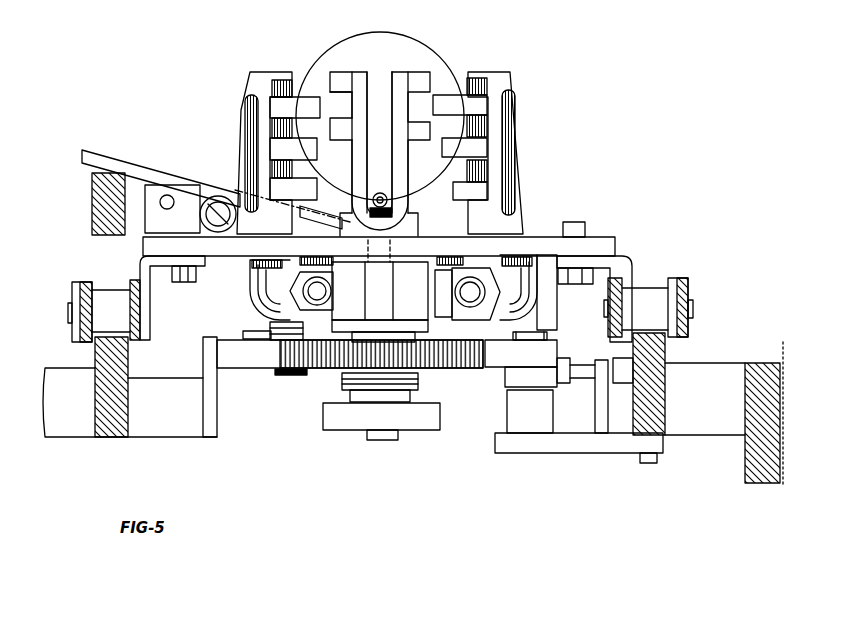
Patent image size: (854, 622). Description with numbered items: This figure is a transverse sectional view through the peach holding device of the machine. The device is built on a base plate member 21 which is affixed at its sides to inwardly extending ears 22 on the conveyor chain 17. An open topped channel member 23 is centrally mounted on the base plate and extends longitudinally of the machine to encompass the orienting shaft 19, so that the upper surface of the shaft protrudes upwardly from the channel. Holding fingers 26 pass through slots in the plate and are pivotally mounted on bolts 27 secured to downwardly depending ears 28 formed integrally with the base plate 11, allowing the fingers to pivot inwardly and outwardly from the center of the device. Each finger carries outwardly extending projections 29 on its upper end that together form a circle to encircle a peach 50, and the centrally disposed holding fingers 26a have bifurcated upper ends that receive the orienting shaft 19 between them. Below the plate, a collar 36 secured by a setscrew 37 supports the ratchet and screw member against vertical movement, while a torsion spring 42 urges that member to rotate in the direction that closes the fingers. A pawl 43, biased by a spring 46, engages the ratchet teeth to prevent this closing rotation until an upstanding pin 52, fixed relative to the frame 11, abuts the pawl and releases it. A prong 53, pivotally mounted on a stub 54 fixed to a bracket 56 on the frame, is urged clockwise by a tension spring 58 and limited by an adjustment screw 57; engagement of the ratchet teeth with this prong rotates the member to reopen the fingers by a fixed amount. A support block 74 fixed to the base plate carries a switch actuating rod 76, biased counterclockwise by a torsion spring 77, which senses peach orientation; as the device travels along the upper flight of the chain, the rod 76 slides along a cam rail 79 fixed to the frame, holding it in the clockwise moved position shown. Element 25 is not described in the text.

The frame 11 is at (115, 430).
The chain 17 is at (75, 290).
The orienting shaft 19 is at (383, 195).
The base plate member 21 is at (541, 234).
The inwardly extending ears 22 is at (622, 258).
The open topped channel member 23 is at (392, 206).
The shaft block 25 is at (421, 295).
The holding fingers 26 is at (250, 80).
The centrally disposed holding fingers 26a is at (412, 80).
The bolts 27 is at (305, 290).
The downwardly depending ears 28 is at (264, 270).
The outwardly extending projections 29 is at (328, 80).
The collar 36 is at (326, 420).
The setscrew 37 is at (297, 372).
The torsion spring 42 is at (345, 380).
The pawl 43 is at (262, 377).
The spring 46 is at (263, 333).
The peach 50 is at (376, 31).
The upstanding pin 52 is at (217, 395).
The prong 53 is at (500, 370).
The stub 54 is at (545, 336).
The bracket 56 is at (565, 448).
The adjustment screw 57 is at (575, 365).
The tension spring 58 is at (593, 396).
The support block 74 is at (183, 190).
The switch actuating rod 76 is at (142, 158).
The torsion spring 77 is at (310, 208).
The cam rail 79 is at (92, 205).